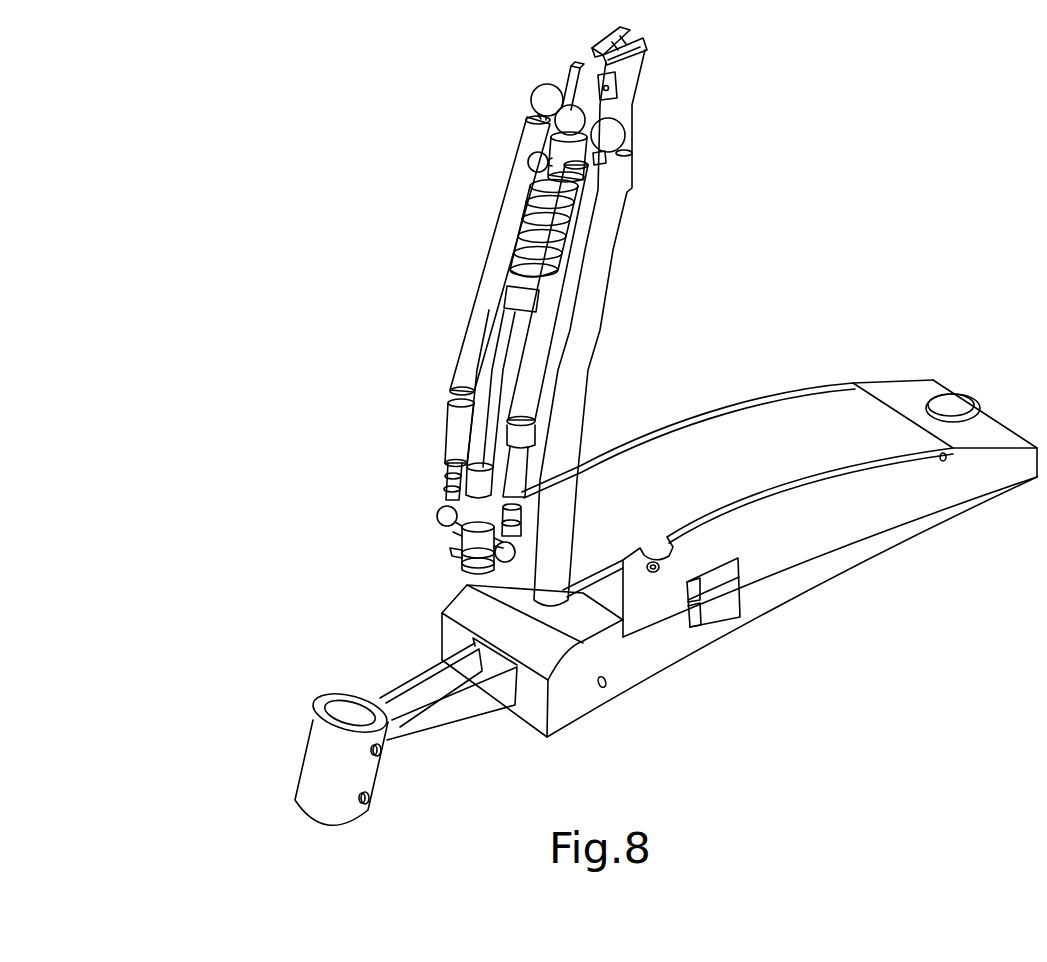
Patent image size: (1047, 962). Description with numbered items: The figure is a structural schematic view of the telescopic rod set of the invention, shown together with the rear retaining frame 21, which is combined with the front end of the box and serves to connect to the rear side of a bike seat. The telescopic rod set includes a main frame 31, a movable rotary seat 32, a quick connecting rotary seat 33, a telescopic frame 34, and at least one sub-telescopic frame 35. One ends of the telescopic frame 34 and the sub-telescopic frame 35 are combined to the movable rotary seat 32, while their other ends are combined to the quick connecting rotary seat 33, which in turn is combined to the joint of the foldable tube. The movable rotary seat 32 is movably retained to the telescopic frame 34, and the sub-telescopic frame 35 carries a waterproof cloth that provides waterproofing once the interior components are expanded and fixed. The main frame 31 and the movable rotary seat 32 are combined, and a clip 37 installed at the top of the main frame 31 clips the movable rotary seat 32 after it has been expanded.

The rear retaining frame 21 is at (330, 760).
The main frame 31 is at (572, 362).
The movable rotary seat 32 is at (562, 122).
The quick connecting rotary seat 33 is at (478, 553).
The telescopic frame 34 is at (495, 395).
The sub-telescopic frame 35 is at (507, 203).
The clip 37 is at (645, 50).